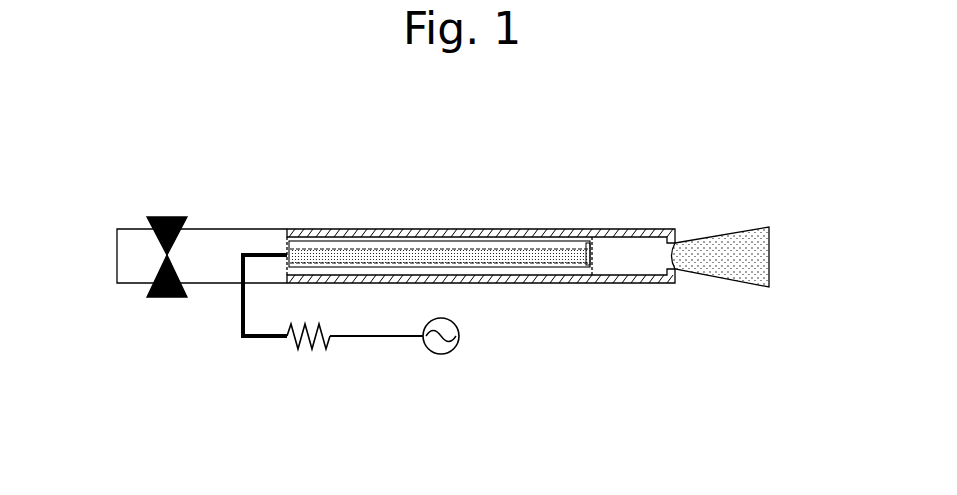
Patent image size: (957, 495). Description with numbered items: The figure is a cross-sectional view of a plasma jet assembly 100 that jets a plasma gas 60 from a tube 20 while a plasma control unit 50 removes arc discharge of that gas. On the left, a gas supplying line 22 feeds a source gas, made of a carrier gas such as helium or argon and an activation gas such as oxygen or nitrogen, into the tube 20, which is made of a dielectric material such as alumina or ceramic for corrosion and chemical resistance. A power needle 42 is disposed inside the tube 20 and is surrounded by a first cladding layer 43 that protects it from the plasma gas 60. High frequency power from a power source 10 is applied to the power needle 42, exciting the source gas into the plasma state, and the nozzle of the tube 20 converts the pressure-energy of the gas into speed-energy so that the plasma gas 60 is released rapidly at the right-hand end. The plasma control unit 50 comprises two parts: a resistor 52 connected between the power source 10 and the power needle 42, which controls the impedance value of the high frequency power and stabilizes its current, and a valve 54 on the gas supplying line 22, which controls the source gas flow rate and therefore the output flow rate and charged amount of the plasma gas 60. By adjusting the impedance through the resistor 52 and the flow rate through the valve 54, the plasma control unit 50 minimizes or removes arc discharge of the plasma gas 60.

The plasma jet assembly 100 is at (610, 183).
The gas supplying line 22 is at (228, 229).
The tube 20 is at (343, 229).
The power needle 42 is at (407, 255).
The first cladding layer 43 is at (488, 241).
The plasma gas 60 is at (748, 229).
The plasma control unit 50 is at (308, 409).
The valve 54 is at (166, 299).
The resistor 52 is at (291, 346).
The power source 10 is at (459, 335).